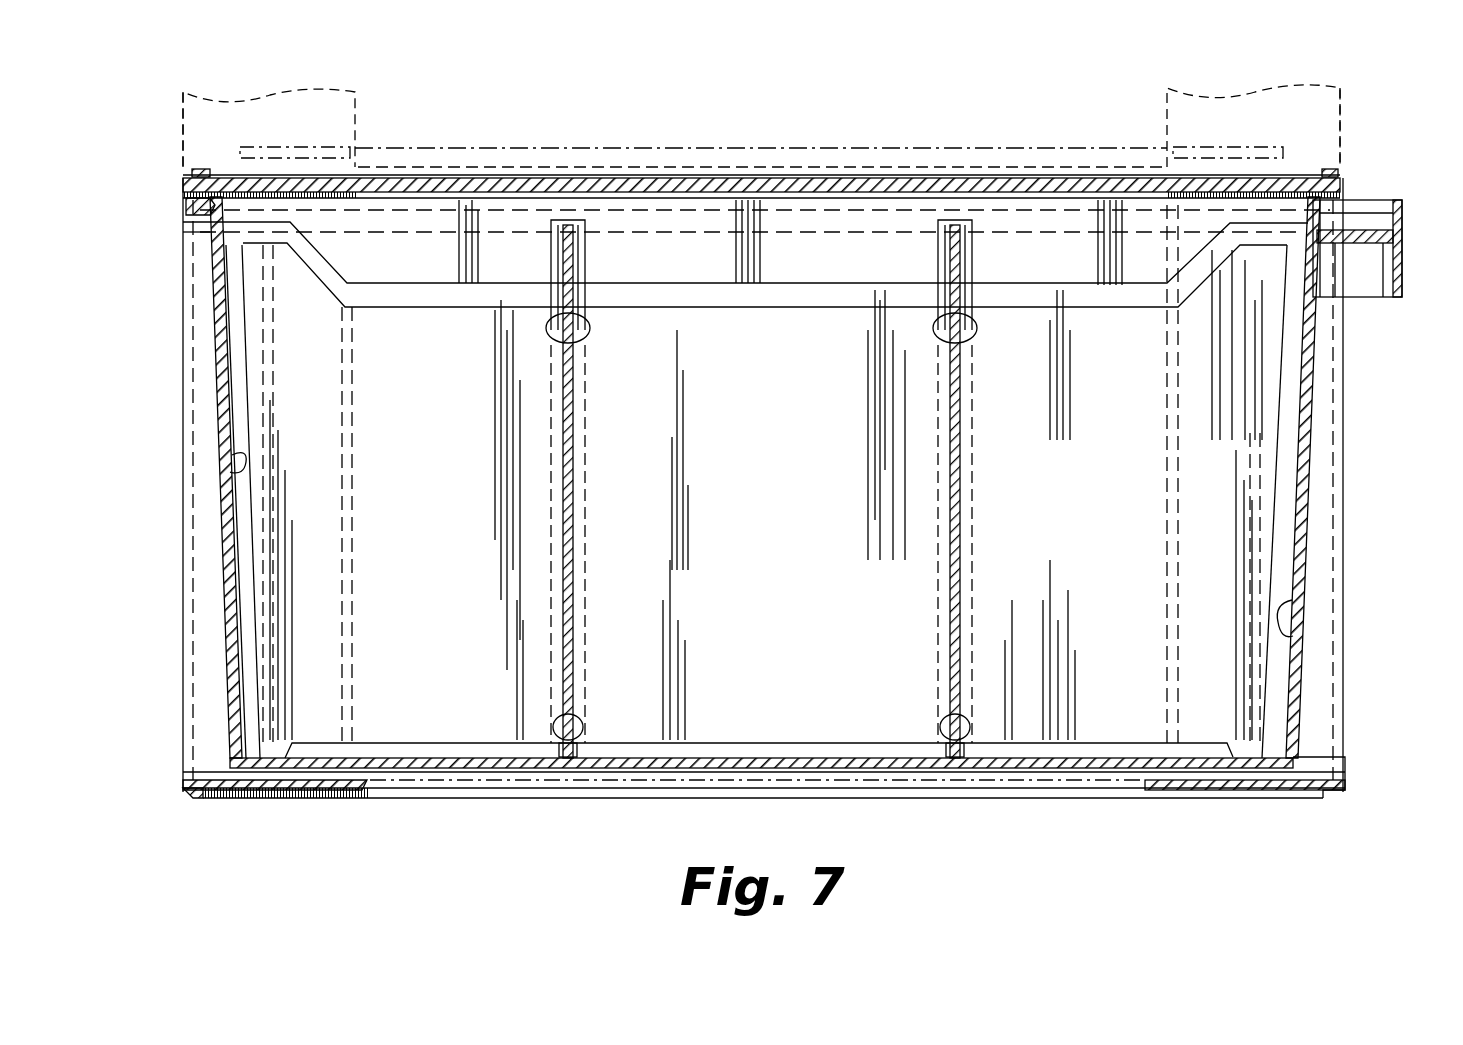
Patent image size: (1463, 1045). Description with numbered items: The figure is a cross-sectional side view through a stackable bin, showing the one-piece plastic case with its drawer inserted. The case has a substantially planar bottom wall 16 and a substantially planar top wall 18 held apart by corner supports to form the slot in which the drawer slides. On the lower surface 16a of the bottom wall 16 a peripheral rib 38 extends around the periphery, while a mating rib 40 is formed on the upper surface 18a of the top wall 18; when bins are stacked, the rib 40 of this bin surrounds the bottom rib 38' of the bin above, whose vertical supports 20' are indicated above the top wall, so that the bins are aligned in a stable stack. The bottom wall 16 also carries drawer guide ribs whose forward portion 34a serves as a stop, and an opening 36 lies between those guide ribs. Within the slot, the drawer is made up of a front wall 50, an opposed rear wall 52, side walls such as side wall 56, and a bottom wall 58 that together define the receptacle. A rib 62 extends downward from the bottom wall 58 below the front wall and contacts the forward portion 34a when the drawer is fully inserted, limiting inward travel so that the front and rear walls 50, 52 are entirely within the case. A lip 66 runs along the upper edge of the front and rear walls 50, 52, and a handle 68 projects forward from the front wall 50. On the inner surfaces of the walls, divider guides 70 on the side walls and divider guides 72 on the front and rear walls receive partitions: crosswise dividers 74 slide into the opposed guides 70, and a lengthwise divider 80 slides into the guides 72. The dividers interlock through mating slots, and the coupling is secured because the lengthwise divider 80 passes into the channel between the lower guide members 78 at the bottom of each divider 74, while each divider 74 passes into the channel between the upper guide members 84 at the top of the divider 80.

The bottom wall 16 is at (417, 797).
The lower surface 16a is at (248, 792).
The top wall 18 is at (1003, 187).
The upper surface 18a is at (1117, 177).
The vertical support 20' is at (767, 116).
The forward portion of drawer guide ribs 34a is at (1273, 777).
The opening 36 is at (373, 797).
The rib 38 is at (180, 820).
The rib 38' is at (761, 103).
The rib 40 is at (200, 174).
The front wall 50 is at (1313, 428).
The rear wall 52 is at (217, 432).
The side wall 56 is at (838, 276).
The bottom wall 58 is at (857, 767).
The rib 62 is at (1293, 778).
The lip 66 is at (188, 203).
The handle 68 is at (1402, 213).
The divider guide 70 is at (553, 245).
The divider guide 72 is at (223, 477).
The divider 74 is at (590, 357).
The lower guide members 78 is at (588, 740).
The divider 80 is at (825, 424).
The upper guide members 84 is at (550, 322).